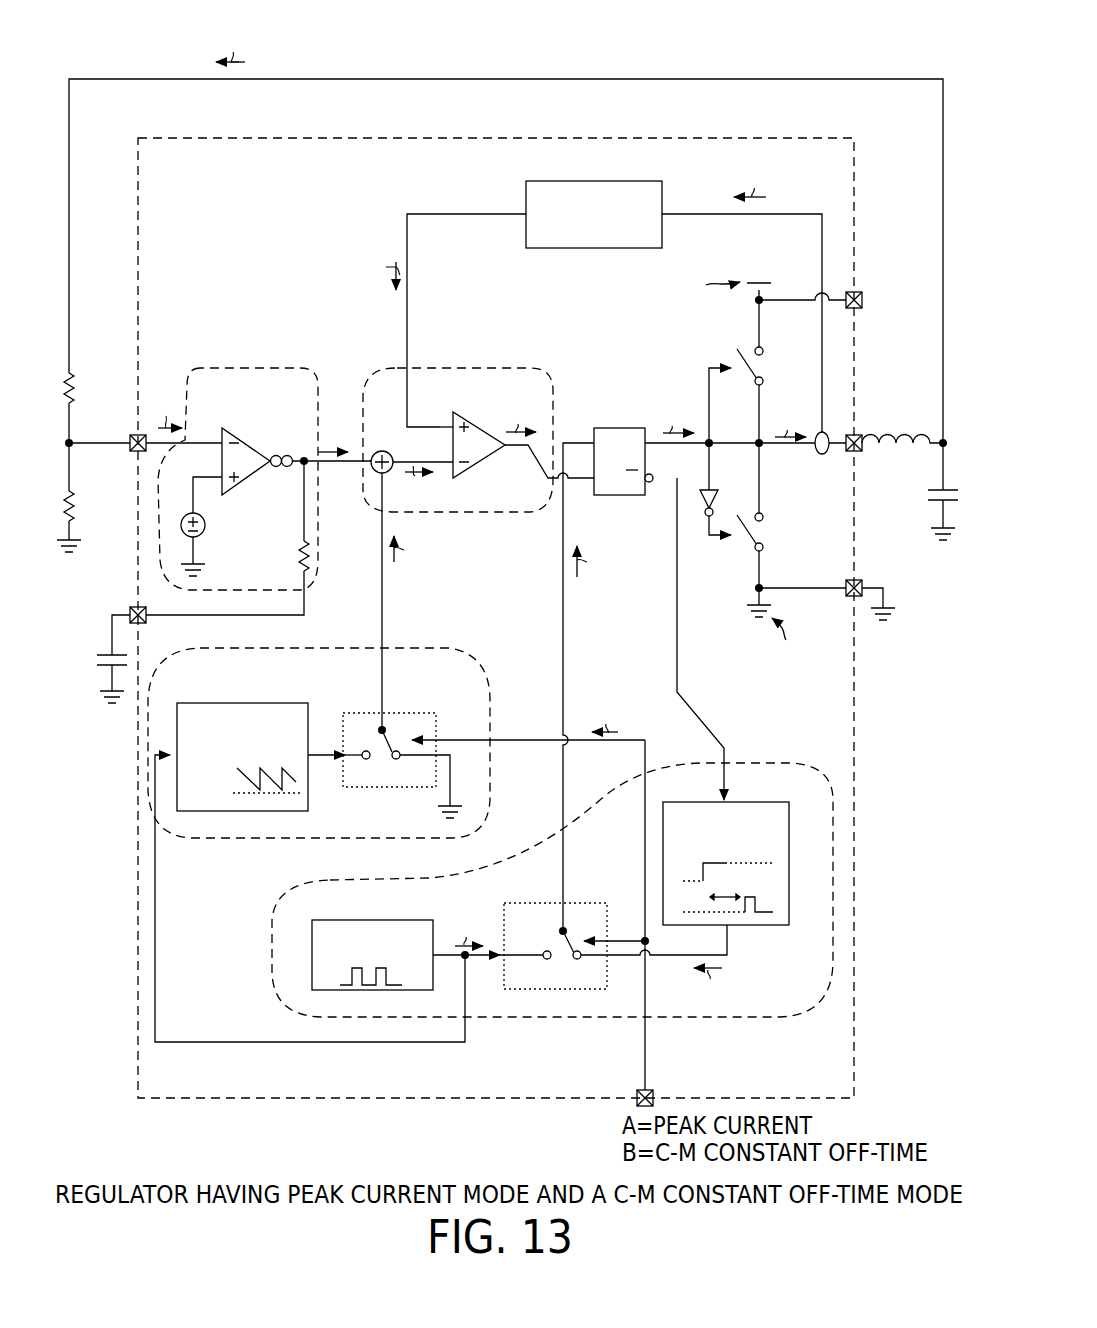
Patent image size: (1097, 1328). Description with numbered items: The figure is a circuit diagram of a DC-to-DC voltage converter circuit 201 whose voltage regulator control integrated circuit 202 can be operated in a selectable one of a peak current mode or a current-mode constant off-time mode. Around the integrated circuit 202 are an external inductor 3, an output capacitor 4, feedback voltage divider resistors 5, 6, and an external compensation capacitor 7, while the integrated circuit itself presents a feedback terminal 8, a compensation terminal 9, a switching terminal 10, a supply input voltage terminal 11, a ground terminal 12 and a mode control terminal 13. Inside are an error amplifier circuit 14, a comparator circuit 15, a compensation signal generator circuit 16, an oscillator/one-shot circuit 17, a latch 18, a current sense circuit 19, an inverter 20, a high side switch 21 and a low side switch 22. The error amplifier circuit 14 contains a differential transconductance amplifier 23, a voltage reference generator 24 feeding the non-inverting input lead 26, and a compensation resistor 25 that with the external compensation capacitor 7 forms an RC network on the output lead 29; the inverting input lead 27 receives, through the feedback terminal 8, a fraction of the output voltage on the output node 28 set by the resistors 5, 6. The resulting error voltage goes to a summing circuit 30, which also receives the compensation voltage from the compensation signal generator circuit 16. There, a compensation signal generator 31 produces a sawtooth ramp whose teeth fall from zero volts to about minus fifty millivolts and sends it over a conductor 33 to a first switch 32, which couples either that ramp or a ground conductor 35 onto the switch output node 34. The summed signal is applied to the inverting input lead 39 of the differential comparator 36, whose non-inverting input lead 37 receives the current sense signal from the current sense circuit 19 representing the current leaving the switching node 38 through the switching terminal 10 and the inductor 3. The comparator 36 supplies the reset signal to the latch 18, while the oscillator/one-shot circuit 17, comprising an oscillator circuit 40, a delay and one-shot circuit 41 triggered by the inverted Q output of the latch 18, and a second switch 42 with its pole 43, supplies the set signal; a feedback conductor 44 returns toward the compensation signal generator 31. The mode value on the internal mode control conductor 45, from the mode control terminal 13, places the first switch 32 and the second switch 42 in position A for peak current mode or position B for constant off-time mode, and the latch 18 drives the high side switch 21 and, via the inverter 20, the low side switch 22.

The DC-to-DC voltage converter circuit 201 is at (861, 60).
The voltage regulator control integrated circuit 202 is at (496, 593).
The inductor 3 is at (902, 424).
The output capacitor 4 is at (926, 496).
The feedback voltage divider resistor 5 is at (80, 408).
The feedback voltage divider resistor 6 is at (76, 497).
The external compensation capacitor 7 is at (92, 670).
The feedback integrated circuit terminal FB 8 is at (132, 454).
The compensation integrated circuit terminal COMP 9 is at (146, 622).
The switching integrated circuit terminal SW 10 is at (848, 454).
The supply input voltage integrated circuit terminal VIN 11 is at (848, 308).
The ground integrated circuit terminal GND 12 is at (850, 596).
The mode control integrated circuit terminal MODE 13 is at (638, 1098).
The error amplifier circuit 14 is at (238, 444).
The comparator circuit 15 is at (458, 409).
The compensation signal generator circuit 16 is at (345, 709).
The oscillator/one-shot circuit 17 is at (554, 859).
The latch 18 is at (623, 435).
The current sense circuit 19 is at (806, 464).
The inverter 20 is at (713, 490).
The high side switch HSS 21 is at (758, 371).
The low side switch LSS 22 is at (787, 560).
The differential transconductance amplifier 23 is at (257, 438).
The voltage reference generator 24 is at (216, 527).
The compensation resistor RCOMP 25 is at (297, 562).
The non-inverting input lead 26 is at (199, 486).
The inverting input lead 27 is at (185, 427).
The output node 28 is at (954, 455).
The output lead 29 is at (329, 446).
The summing circuit 30 is at (412, 466).
The compensation signal generator 31 is at (242, 741).
The switch SW1 32 is at (384, 723).
The conductor 33 is at (339, 742).
The switch output node 34 is at (386, 732).
The ground conductor 35 is at (448, 804).
The differential comparator 36 is at (523, 436).
The non-inverting input lead 37 is at (450, 428).
The switching node SW 38 is at (756, 443).
The inverting input lead 39 is at (430, 477).
The oscillator circuit 40 is at (427, 939).
The delay and one-shot circuit 41 is at (685, 749).
The switch SW2 42 is at (559, 920).
The switch SW2 pole 43 is at (559, 932).
The feedback conductor 44 is at (310, 898).
The internal mode control conductor 45 is at (645, 1052).